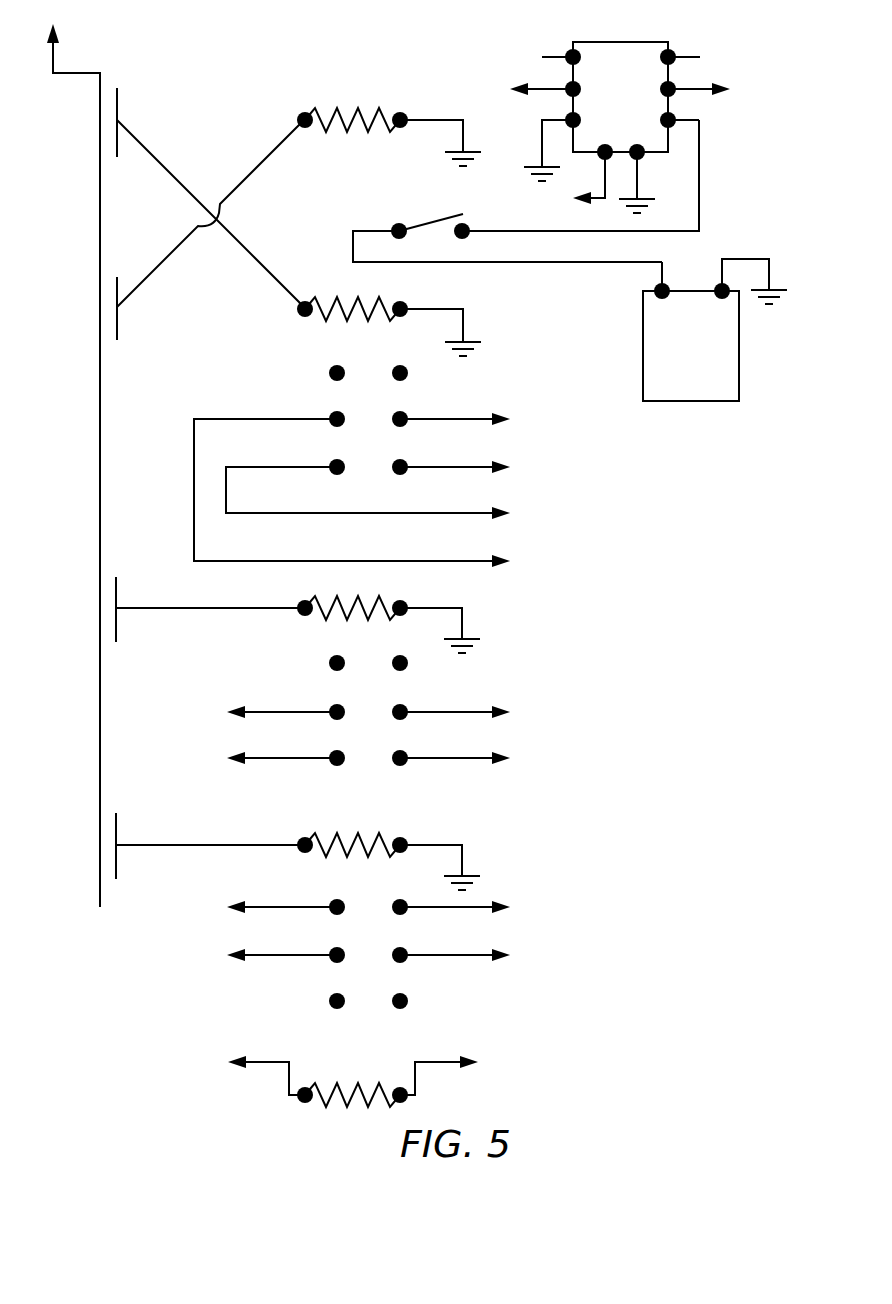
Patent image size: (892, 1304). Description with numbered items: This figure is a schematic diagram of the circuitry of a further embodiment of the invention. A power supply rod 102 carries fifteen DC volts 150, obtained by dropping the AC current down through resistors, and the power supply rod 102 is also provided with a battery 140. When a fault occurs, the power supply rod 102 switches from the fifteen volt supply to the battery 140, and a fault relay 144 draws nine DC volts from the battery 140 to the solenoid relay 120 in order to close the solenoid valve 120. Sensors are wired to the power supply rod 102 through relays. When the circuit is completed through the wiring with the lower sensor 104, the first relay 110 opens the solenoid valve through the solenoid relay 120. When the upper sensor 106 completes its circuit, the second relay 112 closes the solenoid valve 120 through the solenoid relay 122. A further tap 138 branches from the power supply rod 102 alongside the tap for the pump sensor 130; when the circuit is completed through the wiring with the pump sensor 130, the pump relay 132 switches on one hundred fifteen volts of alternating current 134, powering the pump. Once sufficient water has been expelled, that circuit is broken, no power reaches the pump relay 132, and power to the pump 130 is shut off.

The power supply rod 102 is at (572, 127).
The lower sensor 104 is at (116, 865).
The upper sensor 106 is at (116, 625).
The first relay 110 is at (358, 830).
The second relay 112 is at (345, 615).
The solenoid relay 120 is at (353, 1078).
The solenoid relay 122 is at (340, 1098).
The pump sensor 130 is at (117, 330).
The pump relay 132 is at (314, 338).
The alternating current 134 is at (578, 490).
The fourth tap line 138 is at (117, 150).
The battery 140 is at (643, 352).
The fault relay 144 is at (668, 105).
The DC volts 150 is at (548, 211).